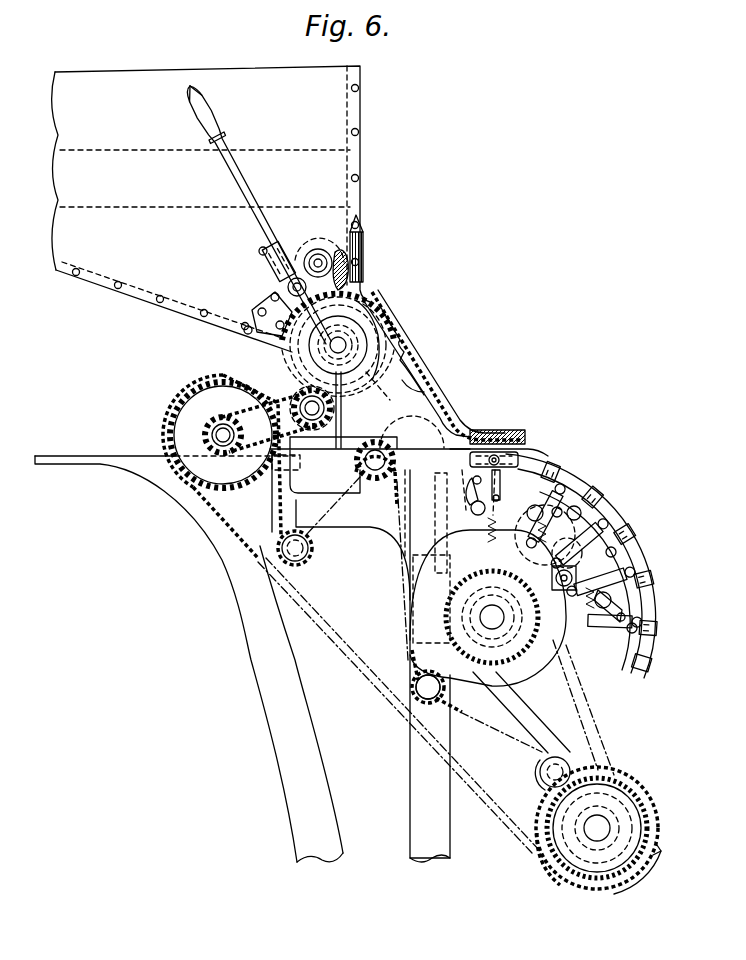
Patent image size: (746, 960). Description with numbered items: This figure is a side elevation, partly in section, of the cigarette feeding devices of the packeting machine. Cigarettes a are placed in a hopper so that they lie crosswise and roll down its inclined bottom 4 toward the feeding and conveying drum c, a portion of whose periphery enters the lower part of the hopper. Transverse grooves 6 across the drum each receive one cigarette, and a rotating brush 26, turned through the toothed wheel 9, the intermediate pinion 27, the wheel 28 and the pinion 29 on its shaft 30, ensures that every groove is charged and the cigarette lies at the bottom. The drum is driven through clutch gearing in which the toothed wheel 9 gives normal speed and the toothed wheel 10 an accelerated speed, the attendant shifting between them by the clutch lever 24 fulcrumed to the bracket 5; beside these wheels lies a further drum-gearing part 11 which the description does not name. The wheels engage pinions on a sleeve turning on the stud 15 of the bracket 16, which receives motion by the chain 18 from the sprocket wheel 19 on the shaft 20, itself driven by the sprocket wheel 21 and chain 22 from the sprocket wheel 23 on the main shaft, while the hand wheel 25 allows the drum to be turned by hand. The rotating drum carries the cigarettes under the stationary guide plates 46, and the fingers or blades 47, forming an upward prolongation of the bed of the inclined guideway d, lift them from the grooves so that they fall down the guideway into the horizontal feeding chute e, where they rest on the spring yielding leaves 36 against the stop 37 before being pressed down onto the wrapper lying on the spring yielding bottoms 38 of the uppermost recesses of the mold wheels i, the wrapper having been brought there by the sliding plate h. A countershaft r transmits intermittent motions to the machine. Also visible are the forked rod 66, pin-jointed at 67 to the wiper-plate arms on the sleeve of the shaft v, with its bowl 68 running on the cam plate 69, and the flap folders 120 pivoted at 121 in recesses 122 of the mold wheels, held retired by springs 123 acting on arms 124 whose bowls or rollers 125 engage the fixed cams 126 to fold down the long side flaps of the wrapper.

The inclined bottom 4 is at (150, 292).
The bracket 5 is at (262, 264).
The grooves 6 is at (428, 343).
The toothed wheel 9 is at (282, 350).
The toothed wheel 10 is at (290, 364).
The drum inner ring 11 is at (298, 378).
The stud 15 is at (324, 408).
The bracket 16 is at (309, 450).
The chain 18 is at (276, 411).
The sprocket wheel 19 is at (226, 418).
The shaft 20 is at (212, 435).
The sprocket wheel 21 is at (198, 390).
The chain 22 is at (284, 487).
The sprocket wheel 23 is at (656, 812).
The clutch lever 24 is at (208, 117).
The hand wheel 25 is at (353, 372).
The brush 26 is at (348, 268).
The intermediate pinion 27 is at (288, 288).
The wheel 28 is at (262, 306).
The pinion 29 is at (318, 249).
The shaft 30 is at (306, 256).
The spring yielding leaves 36 is at (536, 454).
The stop 37 is at (524, 441).
The spring yielding bottoms 38 is at (560, 468).
The stationary guide plates 46 is at (438, 383).
The fingers or blades 47 is at (396, 320).
The forked rod 66 is at (520, 709).
The pin joint 67 is at (456, 648).
The bowl 68 is at (540, 774).
The cam plate 69 is at (610, 776).
The folders 120 is at (470, 460).
The pivot 121 is at (462, 486).
The recesses 122 is at (533, 505).
The springs 123 is at (455, 530).
The arms 124 is at (610, 500).
The bowls or rollers 125 is at (468, 507).
The fixed cams 126 is at (535, 528).
The cigarettes a is at (376, 298).
The feeding and conveying drum c is at (386, 307).
The inclined guideway d is at (403, 367).
The horizontal feeding chute e is at (488, 428).
The sliding plate h is at (455, 628).
The mold wheels i is at (648, 668).
The countershaft r is at (346, 345).
The shaft v is at (492, 595).
The sprocket hub w is at (597, 828).